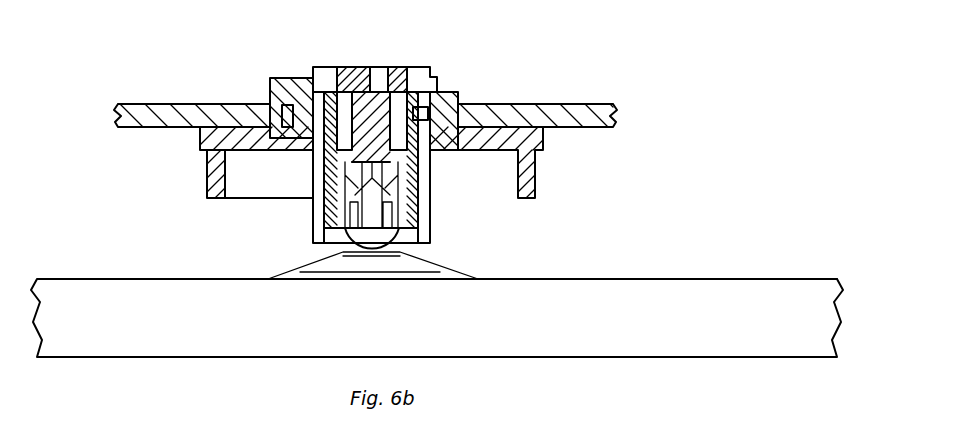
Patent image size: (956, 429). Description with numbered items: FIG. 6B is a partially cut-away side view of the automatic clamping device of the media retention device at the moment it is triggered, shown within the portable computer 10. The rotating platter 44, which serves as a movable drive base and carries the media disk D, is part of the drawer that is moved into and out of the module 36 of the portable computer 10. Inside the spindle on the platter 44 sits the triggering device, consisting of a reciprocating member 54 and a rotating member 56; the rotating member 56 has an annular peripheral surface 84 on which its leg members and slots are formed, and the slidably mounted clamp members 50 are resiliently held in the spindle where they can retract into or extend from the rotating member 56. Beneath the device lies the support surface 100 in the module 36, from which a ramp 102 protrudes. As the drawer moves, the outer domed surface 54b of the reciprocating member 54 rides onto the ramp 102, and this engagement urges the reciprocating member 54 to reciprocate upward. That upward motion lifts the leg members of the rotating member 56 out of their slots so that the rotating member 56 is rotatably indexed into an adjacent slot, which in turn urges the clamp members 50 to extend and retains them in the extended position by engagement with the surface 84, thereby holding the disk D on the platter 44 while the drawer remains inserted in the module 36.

The media disk D is at (172, 103).
The clamp members 50 is at (290, 76).
The annular peripheral surface 84 is at (330, 95).
The rotating member 56 is at (367, 108).
The rotating platter 44 is at (537, 176).
The reciprocating member 54 is at (370, 212).
The outer domed surface 54b is at (376, 240).
The ramp 102 is at (423, 262).
The module 36 is at (78, 290).
The support surface 100 is at (690, 279).
The portable computer 10 is at (688, 130).